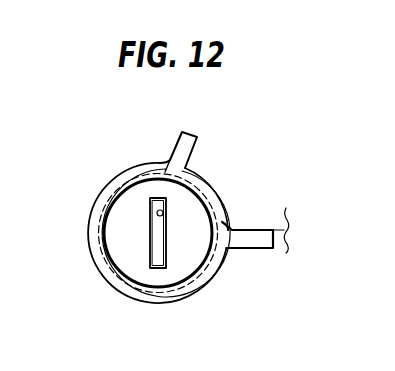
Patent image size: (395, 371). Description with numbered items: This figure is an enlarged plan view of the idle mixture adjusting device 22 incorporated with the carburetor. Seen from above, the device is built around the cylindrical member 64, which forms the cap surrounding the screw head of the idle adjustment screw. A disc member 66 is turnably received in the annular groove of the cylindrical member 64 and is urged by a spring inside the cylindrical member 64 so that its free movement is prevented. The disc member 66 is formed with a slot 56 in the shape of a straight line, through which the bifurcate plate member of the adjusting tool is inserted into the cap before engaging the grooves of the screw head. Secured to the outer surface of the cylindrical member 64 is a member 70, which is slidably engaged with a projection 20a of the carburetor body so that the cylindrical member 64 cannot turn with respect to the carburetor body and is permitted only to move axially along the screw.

The projection 20a is at (230, 121).
The idle mixture adjusting device 22 is at (88, 253).
The slot 56 is at (163, 212).
The cylindrical member 64 is at (163, 288).
The disc member 66 is at (133, 262).
The member for preventing turning movement 70 is at (249, 241).